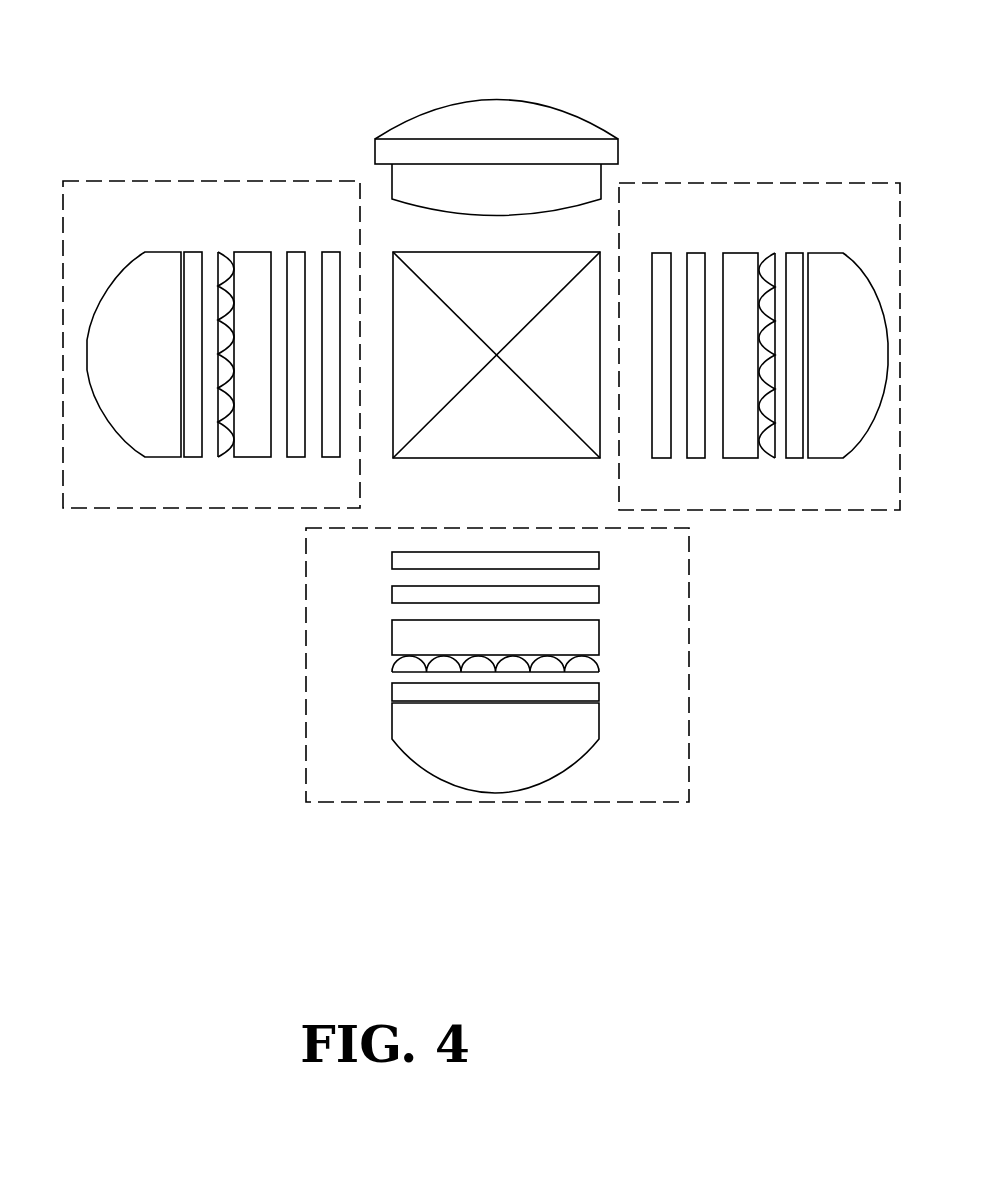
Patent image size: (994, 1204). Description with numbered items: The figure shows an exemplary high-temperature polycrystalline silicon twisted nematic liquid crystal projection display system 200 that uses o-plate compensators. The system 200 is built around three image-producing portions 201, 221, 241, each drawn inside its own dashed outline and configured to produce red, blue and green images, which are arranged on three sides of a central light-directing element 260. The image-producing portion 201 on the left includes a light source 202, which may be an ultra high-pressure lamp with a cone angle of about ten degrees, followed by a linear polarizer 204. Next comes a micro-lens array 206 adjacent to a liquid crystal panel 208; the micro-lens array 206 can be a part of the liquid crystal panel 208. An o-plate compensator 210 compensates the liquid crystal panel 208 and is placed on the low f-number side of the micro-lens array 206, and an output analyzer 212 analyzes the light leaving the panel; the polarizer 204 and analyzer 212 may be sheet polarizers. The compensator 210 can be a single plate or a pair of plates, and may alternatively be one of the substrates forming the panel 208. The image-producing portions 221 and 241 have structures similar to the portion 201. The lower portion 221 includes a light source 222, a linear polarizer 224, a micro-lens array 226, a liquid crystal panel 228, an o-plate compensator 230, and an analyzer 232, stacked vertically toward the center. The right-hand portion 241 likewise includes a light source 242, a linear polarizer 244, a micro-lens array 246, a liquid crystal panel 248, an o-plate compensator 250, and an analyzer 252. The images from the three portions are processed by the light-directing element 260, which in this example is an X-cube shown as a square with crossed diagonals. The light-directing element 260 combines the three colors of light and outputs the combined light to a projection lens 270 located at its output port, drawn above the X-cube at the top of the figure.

The high-temperature polycrystalline silicon twisted nematic liquid crystal projecti 200 is at (108, 60).
The image-producing portion 201 is at (211, 180).
The light source 202 is at (163, 250).
The linear polarizer 204 is at (193, 458).
The micro-lens array 206 is at (232, 262).
The liquid crystal panel 208 is at (252, 458).
The o-plate compensator 210 is at (297, 250).
The output analyzer 212 is at (333, 458).
The image-producing portion 221 is at (690, 664).
The light source 222 is at (599, 722).
The linear polarizer 224 is at (392, 688).
The micro-lens array 226 is at (599, 672).
The liquid crystal panel 228 is at (392, 633).
The o-plate compensator 230 is at (599, 594).
The analyzer 232 is at (392, 558).
The image-producing portion 241 is at (759, 183).
The light source 242 is at (825, 252).
The linear polarizer 244 is at (795, 460).
The micro-lens array 246 is at (773, 252).
The liquid crystal panel 248 is at (740, 460).
The o-plate compensator 250 is at (698, 252).
The analyzer 252 is at (662, 460).
The light-directing element 260 is at (495, 460).
The projection lens 270 is at (374, 151).